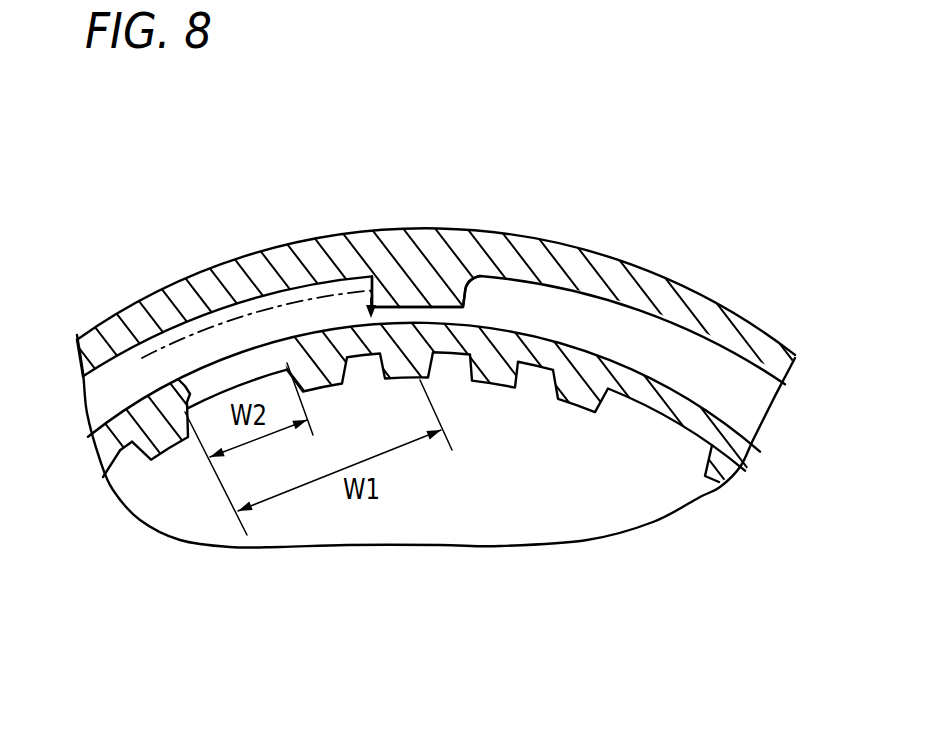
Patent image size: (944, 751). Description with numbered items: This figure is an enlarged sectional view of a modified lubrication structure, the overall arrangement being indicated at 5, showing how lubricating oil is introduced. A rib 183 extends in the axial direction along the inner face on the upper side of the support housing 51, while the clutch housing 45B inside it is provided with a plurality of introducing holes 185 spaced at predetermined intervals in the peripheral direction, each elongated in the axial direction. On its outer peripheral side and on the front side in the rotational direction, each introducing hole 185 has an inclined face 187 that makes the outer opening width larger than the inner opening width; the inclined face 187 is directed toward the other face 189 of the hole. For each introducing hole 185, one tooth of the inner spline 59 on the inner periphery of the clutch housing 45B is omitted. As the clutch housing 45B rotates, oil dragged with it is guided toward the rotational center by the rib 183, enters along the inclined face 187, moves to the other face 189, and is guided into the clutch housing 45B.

The sprocket assembly 5 is at (588, 231).
The support housing 51 is at (700, 287).
The clutch housing 45B is at (607, 353).
The inner spline 59 is at (497, 388).
The rib 183 is at (486, 280).
The introducing hole 185 is at (252, 362).
The inclined face 187 is at (313, 345).
The other face 189 is at (193, 387).